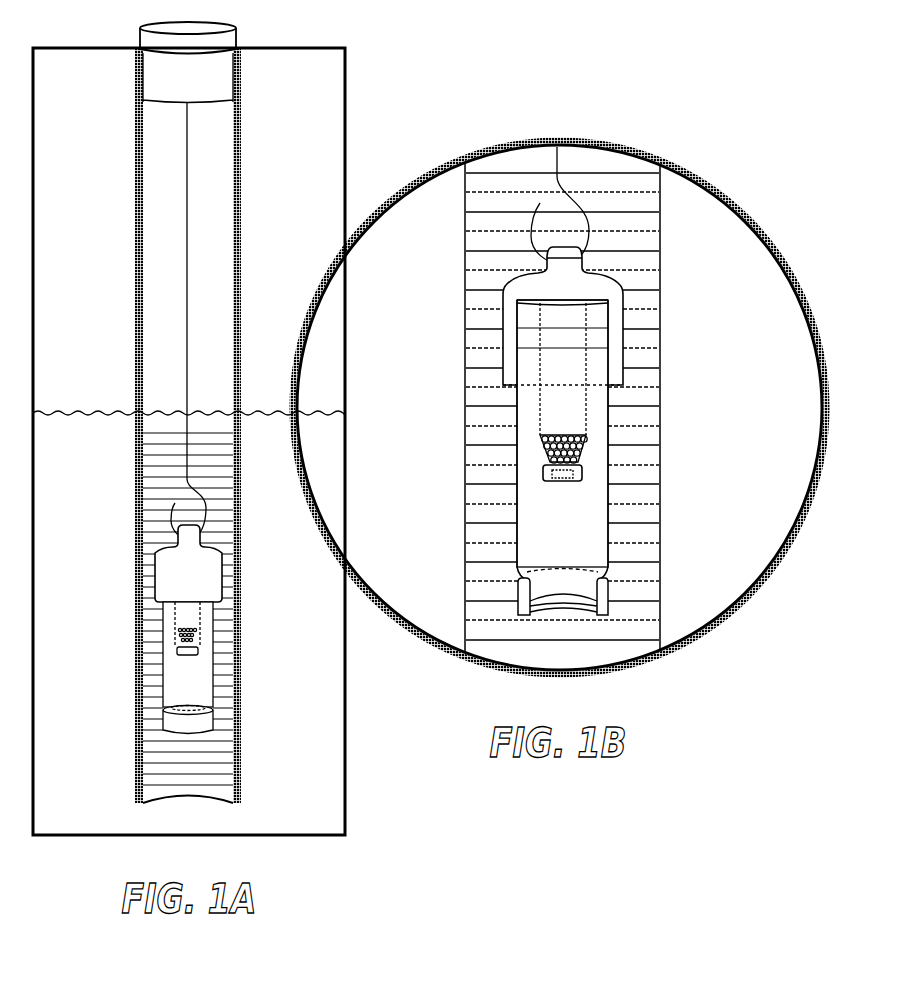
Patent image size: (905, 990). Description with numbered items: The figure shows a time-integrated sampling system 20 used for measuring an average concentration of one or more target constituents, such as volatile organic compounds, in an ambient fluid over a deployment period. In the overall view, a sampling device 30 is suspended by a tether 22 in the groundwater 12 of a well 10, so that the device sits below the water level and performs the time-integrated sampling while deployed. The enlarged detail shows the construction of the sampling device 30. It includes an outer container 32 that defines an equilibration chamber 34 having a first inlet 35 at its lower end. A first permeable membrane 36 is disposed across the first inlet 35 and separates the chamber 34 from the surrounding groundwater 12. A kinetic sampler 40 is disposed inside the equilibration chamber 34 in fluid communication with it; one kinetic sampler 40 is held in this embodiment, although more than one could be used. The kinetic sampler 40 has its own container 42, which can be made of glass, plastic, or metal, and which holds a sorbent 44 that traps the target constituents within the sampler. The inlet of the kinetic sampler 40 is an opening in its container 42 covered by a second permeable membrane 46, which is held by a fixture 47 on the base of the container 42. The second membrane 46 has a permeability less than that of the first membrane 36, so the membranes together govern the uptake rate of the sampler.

In FIG. 1A, the well 10 is at (143, 179).
In FIG. 1A, the groundwater 12 is at (155, 492).
In FIG. 1B, the groundwater 12 is at (493, 264).
In FIG. 1A, the time-integrated sampling system 20 is at (387, 78).
In FIG. 1A, the tether 22 is at (186, 273).
In FIG. 1A, the sampling device 30 is at (223, 633).
In FIG. 1B, the sampling device 30 is at (699, 273).
In FIG. 1B, the outer container 32 is at (610, 486).
In FIG. 1B, the equilibration chamber 34 is at (608, 525).
In FIG. 1B, the first inlet 35 is at (568, 583).
In FIG. 1B, the first permeable membrane 36 is at (580, 612).
In FIG. 1B, the kinetic sampler 40 is at (596, 415).
In FIG. 1B, the container 42 is at (548, 404).
In FIG. 1B, the sorbent 44 is at (545, 448).
In FIG. 1B, the second permeable membrane 46 is at (547, 482).
In FIG. 1B, the fixture 47 is at (548, 472).